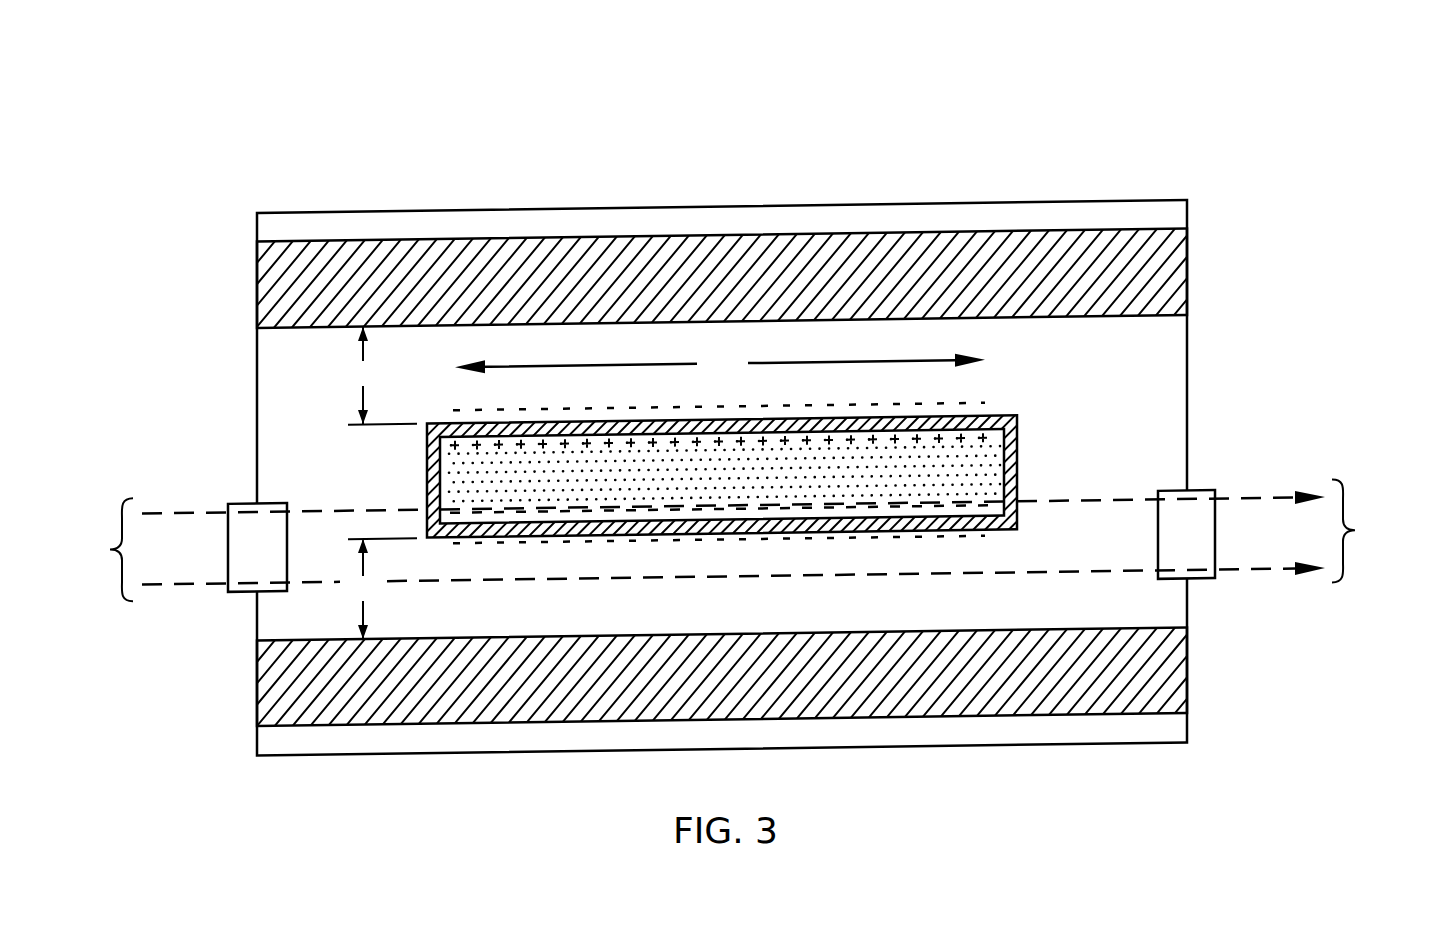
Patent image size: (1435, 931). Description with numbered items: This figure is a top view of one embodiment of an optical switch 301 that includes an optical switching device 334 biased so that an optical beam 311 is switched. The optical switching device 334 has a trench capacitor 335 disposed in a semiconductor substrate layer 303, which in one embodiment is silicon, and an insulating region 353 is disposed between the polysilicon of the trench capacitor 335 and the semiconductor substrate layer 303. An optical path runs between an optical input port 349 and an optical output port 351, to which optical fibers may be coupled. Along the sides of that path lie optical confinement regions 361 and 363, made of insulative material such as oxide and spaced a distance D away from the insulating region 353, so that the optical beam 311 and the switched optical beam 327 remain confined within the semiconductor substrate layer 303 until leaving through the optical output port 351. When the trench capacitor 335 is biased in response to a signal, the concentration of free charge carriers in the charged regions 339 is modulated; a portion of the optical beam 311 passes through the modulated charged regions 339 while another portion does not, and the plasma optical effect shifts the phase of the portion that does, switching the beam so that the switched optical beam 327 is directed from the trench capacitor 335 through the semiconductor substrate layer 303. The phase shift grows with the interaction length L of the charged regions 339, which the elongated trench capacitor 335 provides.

The optical switch 301 is at (1080, 122).
The semiconductor substrate layer 303 is at (1188, 372).
The optical beam 311 is at (243, 548).
The switched optical beam 327 is at (901, 536).
The optical switching device 334 is at (1000, 375).
The trench capacitor 335 is at (1017, 482).
The charged regions 339 is at (425, 537).
The optical input port 349 is at (243, 498).
The optical output port 351 is at (1190, 496).
The insulating region 353 is at (1017, 421).
The optical confinement region 361 is at (1188, 289).
The optical confinement region 363 is at (1188, 683).